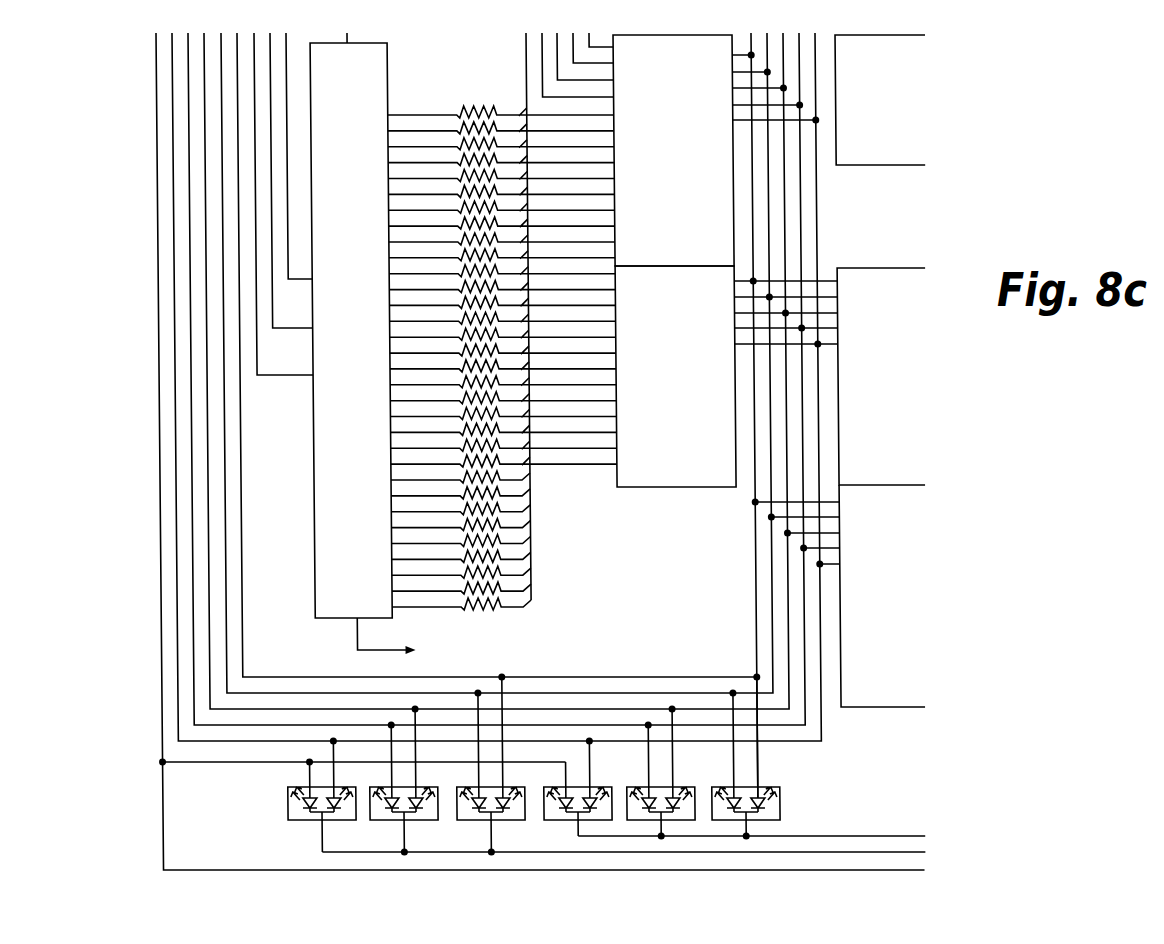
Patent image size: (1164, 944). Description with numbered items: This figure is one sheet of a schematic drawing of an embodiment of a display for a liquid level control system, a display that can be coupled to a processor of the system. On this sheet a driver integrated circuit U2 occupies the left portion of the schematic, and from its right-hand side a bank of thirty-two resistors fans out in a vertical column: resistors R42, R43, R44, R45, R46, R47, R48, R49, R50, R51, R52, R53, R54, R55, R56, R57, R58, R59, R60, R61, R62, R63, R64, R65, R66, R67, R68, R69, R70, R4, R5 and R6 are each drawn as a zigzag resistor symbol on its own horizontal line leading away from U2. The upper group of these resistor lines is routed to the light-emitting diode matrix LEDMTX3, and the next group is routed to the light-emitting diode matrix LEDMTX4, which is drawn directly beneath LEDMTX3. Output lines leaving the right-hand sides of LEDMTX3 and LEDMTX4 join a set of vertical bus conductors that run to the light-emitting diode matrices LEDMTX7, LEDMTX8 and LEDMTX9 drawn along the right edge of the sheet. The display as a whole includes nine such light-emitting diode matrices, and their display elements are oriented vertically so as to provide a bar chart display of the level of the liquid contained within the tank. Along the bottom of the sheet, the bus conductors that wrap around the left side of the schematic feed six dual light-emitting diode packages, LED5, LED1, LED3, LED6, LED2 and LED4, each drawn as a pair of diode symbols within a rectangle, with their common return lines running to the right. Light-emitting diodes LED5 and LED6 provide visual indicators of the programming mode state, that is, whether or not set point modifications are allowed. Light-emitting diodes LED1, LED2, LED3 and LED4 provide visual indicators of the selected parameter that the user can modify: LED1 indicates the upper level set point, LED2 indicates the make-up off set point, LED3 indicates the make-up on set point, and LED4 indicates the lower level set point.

The driver integrated circuit U2 is at (360, 341).
The resistor R42 is at (501, 109).
The resistor R43 is at (501, 125).
The resistor R44 is at (501, 141).
The resistor R45 is at (501, 157).
The resistor R46 is at (501, 172).
The resistor R47 is at (501, 188).
The resistor R48 is at (501, 204).
The resistor R49 is at (502, 220).
The resistor R50 is at (502, 236).
The resistor R51 is at (502, 252).
The resistor R52 is at (502, 268).
The resistor R53 is at (502, 284).
The resistor R54 is at (502, 299).
The resistor R55 is at (502, 315).
The resistor R56 is at (503, 331).
The resistor R57 is at (503, 347).
The resistor R58 is at (503, 363).
The resistor R59 is at (503, 379).
The resistor R60 is at (503, 395).
The resistor R61 is at (503, 410).
The resistor R62 is at (503, 426).
The resistor R63 is at (504, 442).
The resistor R64 is at (504, 458).
The resistor R65 is at (460, 474).
The resistor R66 is at (460, 490).
The resistor R67 is at (460, 506).
The resistor R68 is at (460, 522).
The resistor R69 is at (460, 537).
The resistor R70 is at (461, 553).
The resistor R4 is at (461, 569).
The resistor R5 is at (461, 585).
The resistor R6 is at (461, 601).
The light-emitting diode matrix LEDMTX3 is at (673, 150).
The light-emitting diode matrix LEDMTX4 is at (675, 376).
The light-emitting diode matrix LEDMTX7 is at (880, 100).
The light-emitting diode matrix LEDMTX8 is at (882, 376).
The light-emitting diode matrix LEDMTX9 is at (882, 596).
The light-emitting diode LED1 is at (392, 780).
The light-emitting diode LED2 is at (674, 772).
The light-emitting diode LED3 is at (477, 764).
The light-emitting diode LED4 is at (759, 756).
The light-emitting diode LED5 is at (315, 796).
The light-emitting diode LED6 is at (591, 788).